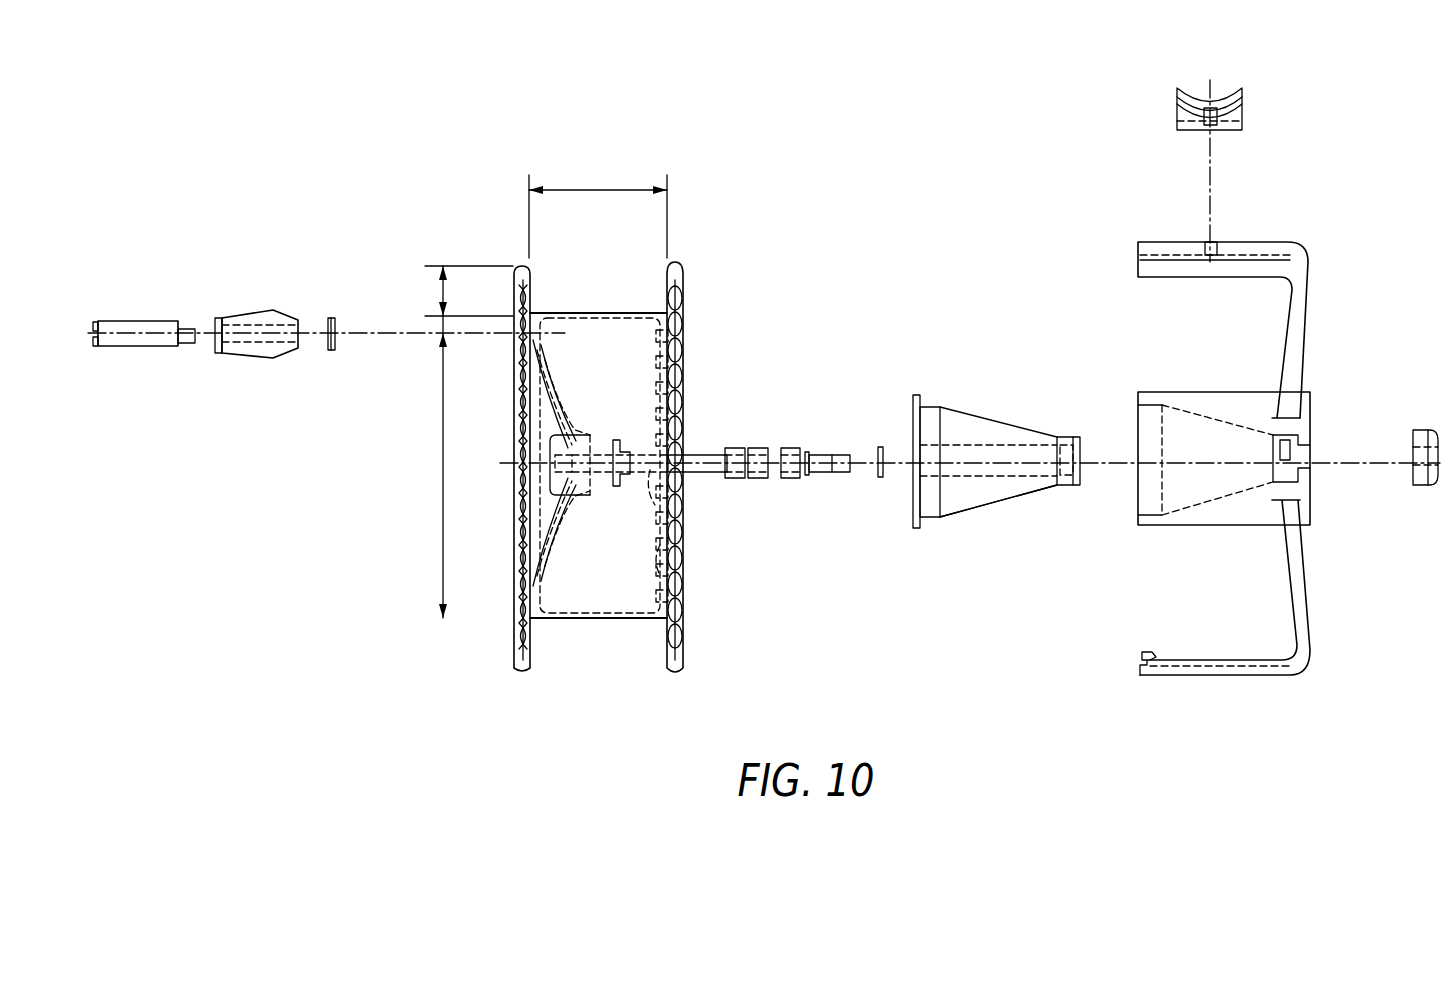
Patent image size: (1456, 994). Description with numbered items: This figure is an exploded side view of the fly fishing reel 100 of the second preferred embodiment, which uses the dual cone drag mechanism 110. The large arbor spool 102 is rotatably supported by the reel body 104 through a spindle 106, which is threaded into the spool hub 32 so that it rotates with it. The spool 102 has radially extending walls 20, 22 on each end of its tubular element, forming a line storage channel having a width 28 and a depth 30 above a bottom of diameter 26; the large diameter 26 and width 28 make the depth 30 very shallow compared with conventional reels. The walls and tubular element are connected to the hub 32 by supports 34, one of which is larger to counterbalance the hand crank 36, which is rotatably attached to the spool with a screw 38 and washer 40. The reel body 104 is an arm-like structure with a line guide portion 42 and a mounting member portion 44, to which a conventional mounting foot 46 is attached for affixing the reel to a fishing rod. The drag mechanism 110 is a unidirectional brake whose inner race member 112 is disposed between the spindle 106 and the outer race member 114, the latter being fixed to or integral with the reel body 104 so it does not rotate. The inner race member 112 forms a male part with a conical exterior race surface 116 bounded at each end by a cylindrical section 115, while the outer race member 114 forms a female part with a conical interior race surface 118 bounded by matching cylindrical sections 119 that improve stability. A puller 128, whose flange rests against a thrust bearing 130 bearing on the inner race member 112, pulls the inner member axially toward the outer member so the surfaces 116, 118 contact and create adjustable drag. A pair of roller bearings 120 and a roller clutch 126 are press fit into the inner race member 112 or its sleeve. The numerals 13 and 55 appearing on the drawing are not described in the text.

The knob 13 is at (1420, 428).
The radially extending wall 20 is at (688, 622).
The radially extending wall 22 is at (512, 640).
The diameter 26 is at (443, 463).
The width 28 is at (598, 190).
The depth 30 is at (443, 297).
The hub 32 is at (650, 505).
The supports 34 is at (565, 405).
The hand crank 36 is at (250, 315).
The screw 38 is at (145, 320).
The washer 40 is at (333, 317).
The line guide portion 42 is at (1172, 678).
The mounting member portion 44 is at (1270, 243).
The mounting foot 46 is at (1242, 112).
The grip projection 55 is at (650, 565).
The fly fishing reel 100 is at (852, 165).
The large arbor spool 102 is at (688, 272).
The reel body 104 is at (1312, 330).
The spindle 106 is at (706, 450).
The dual cone drag mechanism 110 is at (945, 350).
The inner race member 112 is at (1030, 420).
The outer race member 114 is at (1228, 412).
The cylindrical section 115 is at (930, 405).
The exterior race surface 116 is at (966, 512).
The interior race surface 118 is at (1140, 430).
The cylindrical section 119 is at (1292, 486).
The roller bearings 120 is at (735, 448).
The roller clutch 126 is at (759, 480).
The puller 128 is at (828, 452).
The thrust bearing 130 is at (881, 478).